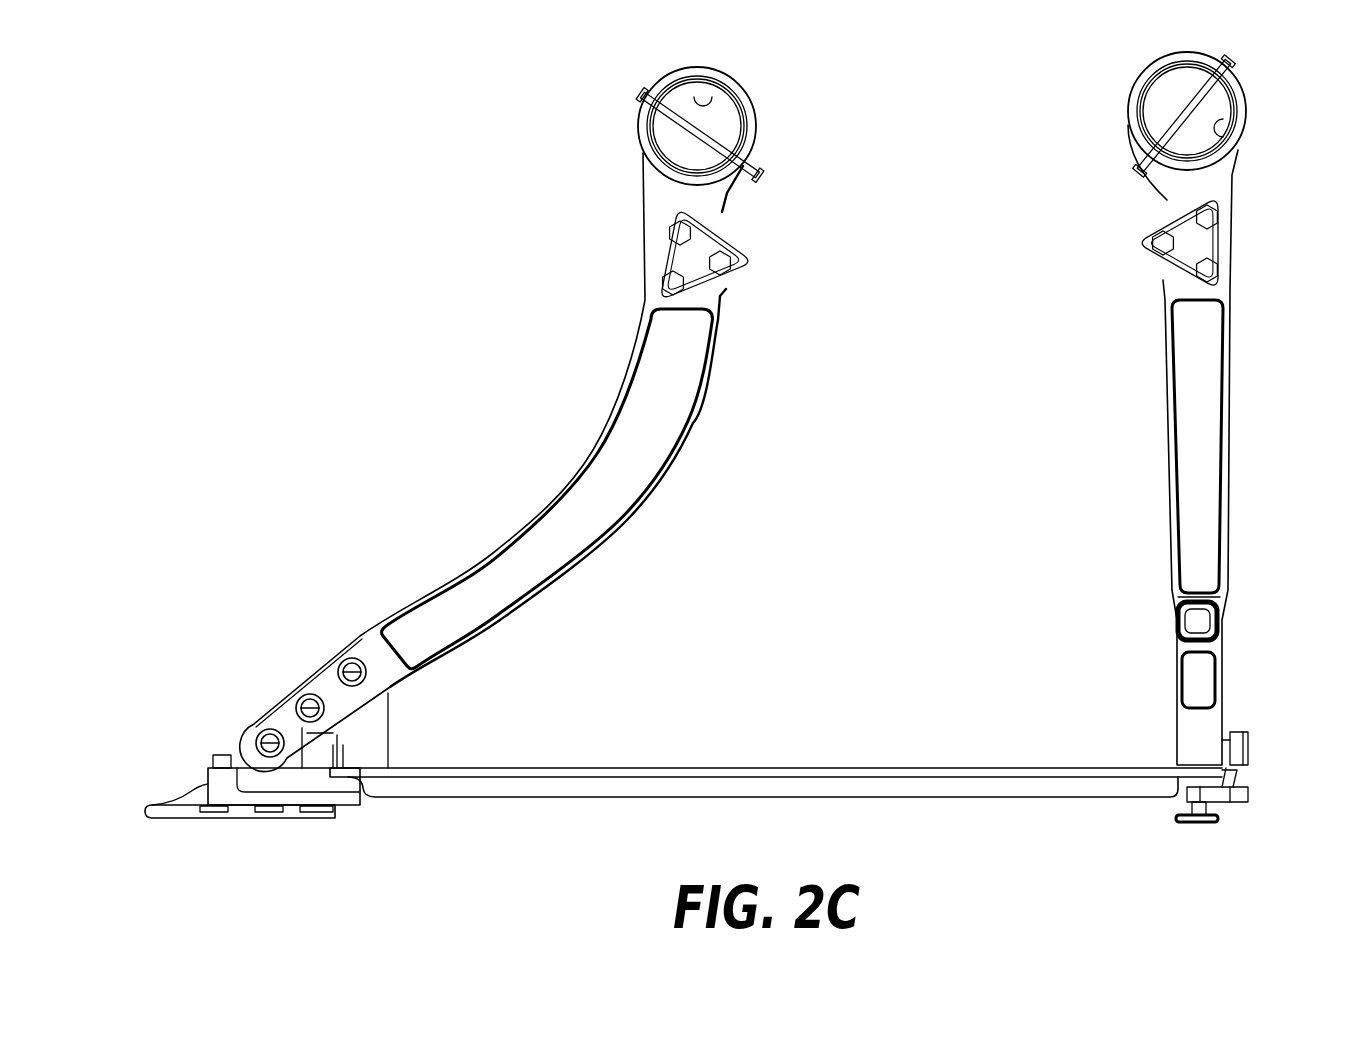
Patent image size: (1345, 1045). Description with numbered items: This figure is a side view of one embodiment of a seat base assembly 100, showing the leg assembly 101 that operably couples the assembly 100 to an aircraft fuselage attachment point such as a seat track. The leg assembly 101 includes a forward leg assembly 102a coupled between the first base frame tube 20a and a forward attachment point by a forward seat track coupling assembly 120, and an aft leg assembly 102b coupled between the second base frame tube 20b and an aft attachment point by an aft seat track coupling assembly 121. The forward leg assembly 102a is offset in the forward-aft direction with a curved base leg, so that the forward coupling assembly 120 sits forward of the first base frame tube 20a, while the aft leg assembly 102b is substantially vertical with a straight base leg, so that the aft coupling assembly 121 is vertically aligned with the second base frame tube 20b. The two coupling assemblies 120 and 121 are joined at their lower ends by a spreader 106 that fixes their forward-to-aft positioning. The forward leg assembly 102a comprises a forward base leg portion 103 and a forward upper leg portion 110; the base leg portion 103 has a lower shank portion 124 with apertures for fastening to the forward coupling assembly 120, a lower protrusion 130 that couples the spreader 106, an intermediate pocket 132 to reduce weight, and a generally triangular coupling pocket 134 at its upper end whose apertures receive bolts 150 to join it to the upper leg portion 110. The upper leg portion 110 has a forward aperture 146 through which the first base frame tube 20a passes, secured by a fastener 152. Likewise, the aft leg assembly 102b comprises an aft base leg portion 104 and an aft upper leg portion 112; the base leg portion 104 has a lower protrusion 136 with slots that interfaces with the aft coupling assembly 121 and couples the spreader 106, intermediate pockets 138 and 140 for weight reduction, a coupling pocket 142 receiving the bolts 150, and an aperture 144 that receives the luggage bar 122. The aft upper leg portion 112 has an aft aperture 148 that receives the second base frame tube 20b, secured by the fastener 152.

The seat base assembly 100 is at (265, 185).
The leg assembly 101 is at (462, 370).
The forward leg assembly 102a is at (545, 483).
The aft leg assembly 102b is at (1160, 440).
The forward base leg portion 103 is at (625, 398).
The aft base leg portion 104 is at (1168, 330).
The spreader 106 is at (795, 785).
The forward upper leg portion 110 is at (665, 190).
The aft upper leg portion 112 is at (1225, 170).
The forward seat track coupling assembly 120 is at (262, 705).
The aft seat track coupling assembly 121 is at (1225, 812).
The luggage bar 122 is at (1215, 600).
The lower shank portion 124 is at (318, 658).
The lower protrusion 130 is at (380, 735).
The intermediate pocket 132 is at (655, 445).
The coupling pocket 134 is at (720, 240).
The lower protrusion 136 is at (1245, 745).
The intermediate pocket 138 is at (1200, 678).
The intermediate pocket 140 is at (1205, 385).
The coupling pocket 142 is at (1205, 238).
The aperture 144 is at (1220, 620).
The forward aperture 146 is at (643, 147).
The aft aperture 148 is at (1240, 95).
The bolts 150 is at (725, 263).
The fastener 152 is at (640, 100).
The first base frame tube 20a is at (700, 100).
The second base frame tube 20b is at (1225, 128).